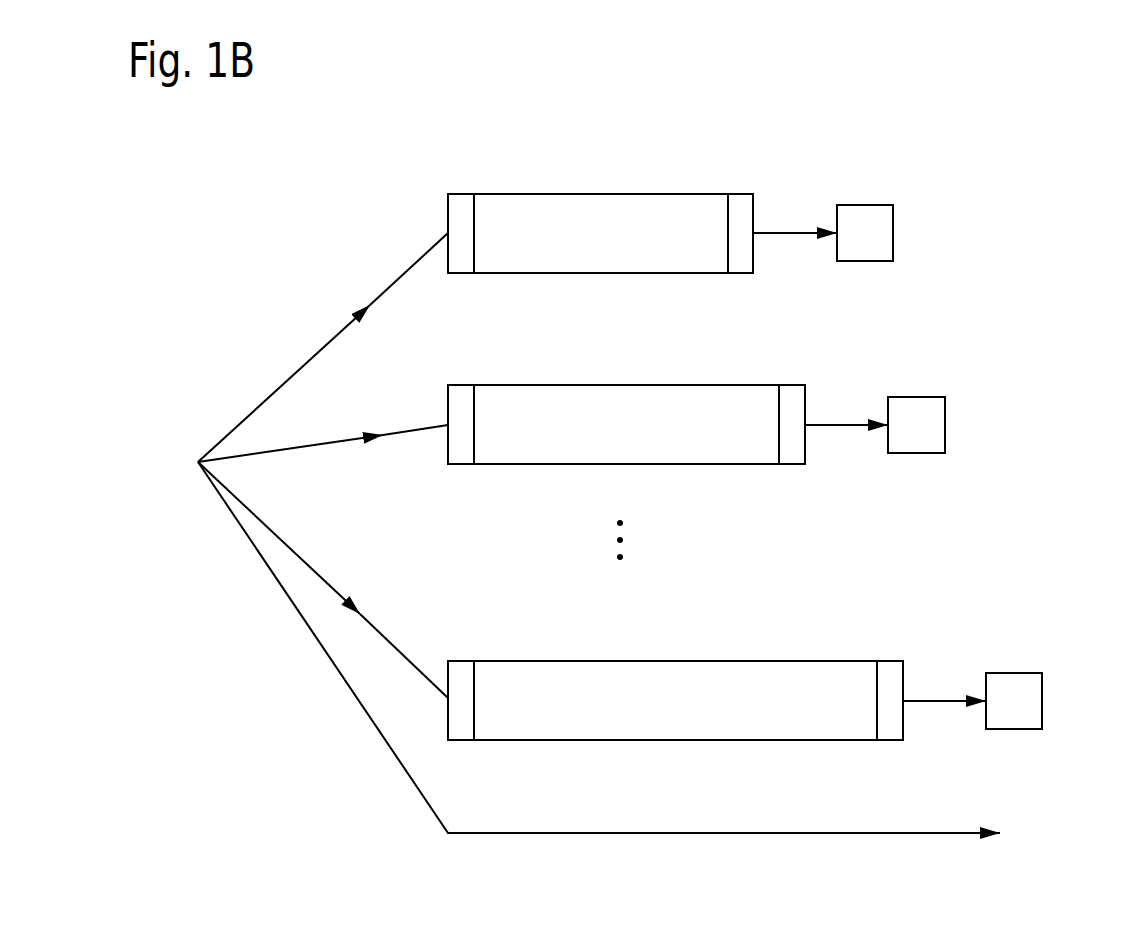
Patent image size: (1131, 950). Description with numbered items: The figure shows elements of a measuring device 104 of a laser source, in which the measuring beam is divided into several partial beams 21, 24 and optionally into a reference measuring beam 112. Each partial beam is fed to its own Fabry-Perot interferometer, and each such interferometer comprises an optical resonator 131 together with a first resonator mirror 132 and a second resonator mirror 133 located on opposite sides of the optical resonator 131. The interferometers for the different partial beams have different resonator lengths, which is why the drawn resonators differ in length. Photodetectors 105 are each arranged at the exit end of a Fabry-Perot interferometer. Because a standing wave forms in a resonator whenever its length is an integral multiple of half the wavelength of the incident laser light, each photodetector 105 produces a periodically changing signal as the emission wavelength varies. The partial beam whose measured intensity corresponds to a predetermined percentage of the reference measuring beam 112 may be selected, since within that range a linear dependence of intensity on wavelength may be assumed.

The measuring device 104 is at (913, 125).
The photodetector 105 is at (878, 232).
The reference measuring beam 112 is at (621, 655).
The optical resonator 131 is at (728, 179).
The first resonator mirror 132 is at (461, 205).
The second resonator mirror 133 is at (741, 205).
The partial beam 21 is at (320, 577).
The partial beam 24 is at (325, 447).